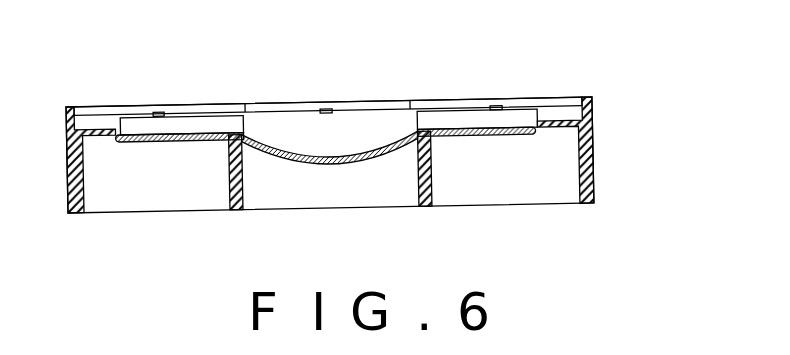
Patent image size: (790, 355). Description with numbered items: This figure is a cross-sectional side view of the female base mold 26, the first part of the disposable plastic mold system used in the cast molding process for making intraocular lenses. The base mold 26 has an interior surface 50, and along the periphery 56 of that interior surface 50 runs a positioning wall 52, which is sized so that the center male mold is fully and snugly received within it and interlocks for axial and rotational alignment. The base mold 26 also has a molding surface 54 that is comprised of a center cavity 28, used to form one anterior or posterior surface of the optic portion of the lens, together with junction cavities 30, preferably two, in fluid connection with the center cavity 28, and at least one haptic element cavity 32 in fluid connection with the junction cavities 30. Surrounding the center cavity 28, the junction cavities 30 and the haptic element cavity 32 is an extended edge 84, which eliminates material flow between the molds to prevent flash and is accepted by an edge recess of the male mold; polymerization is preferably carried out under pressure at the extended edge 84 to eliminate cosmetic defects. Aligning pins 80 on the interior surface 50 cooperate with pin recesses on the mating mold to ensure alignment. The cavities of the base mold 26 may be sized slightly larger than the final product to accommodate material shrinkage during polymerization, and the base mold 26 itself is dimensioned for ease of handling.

The female base mold 26 is at (592, 162).
The center cavity 28 is at (351, 142).
The junction cavities 30 is at (245, 123).
The haptic element cavity 32 is at (380, 113).
The interior surface 50 is at (100, 131).
The positioning wall 52 is at (448, 96).
The molding surface 54 is at (191, 133).
The periphery 56 is at (592, 108).
The aligning pins 80 is at (157, 111).
The extended edge 84 is at (232, 113).